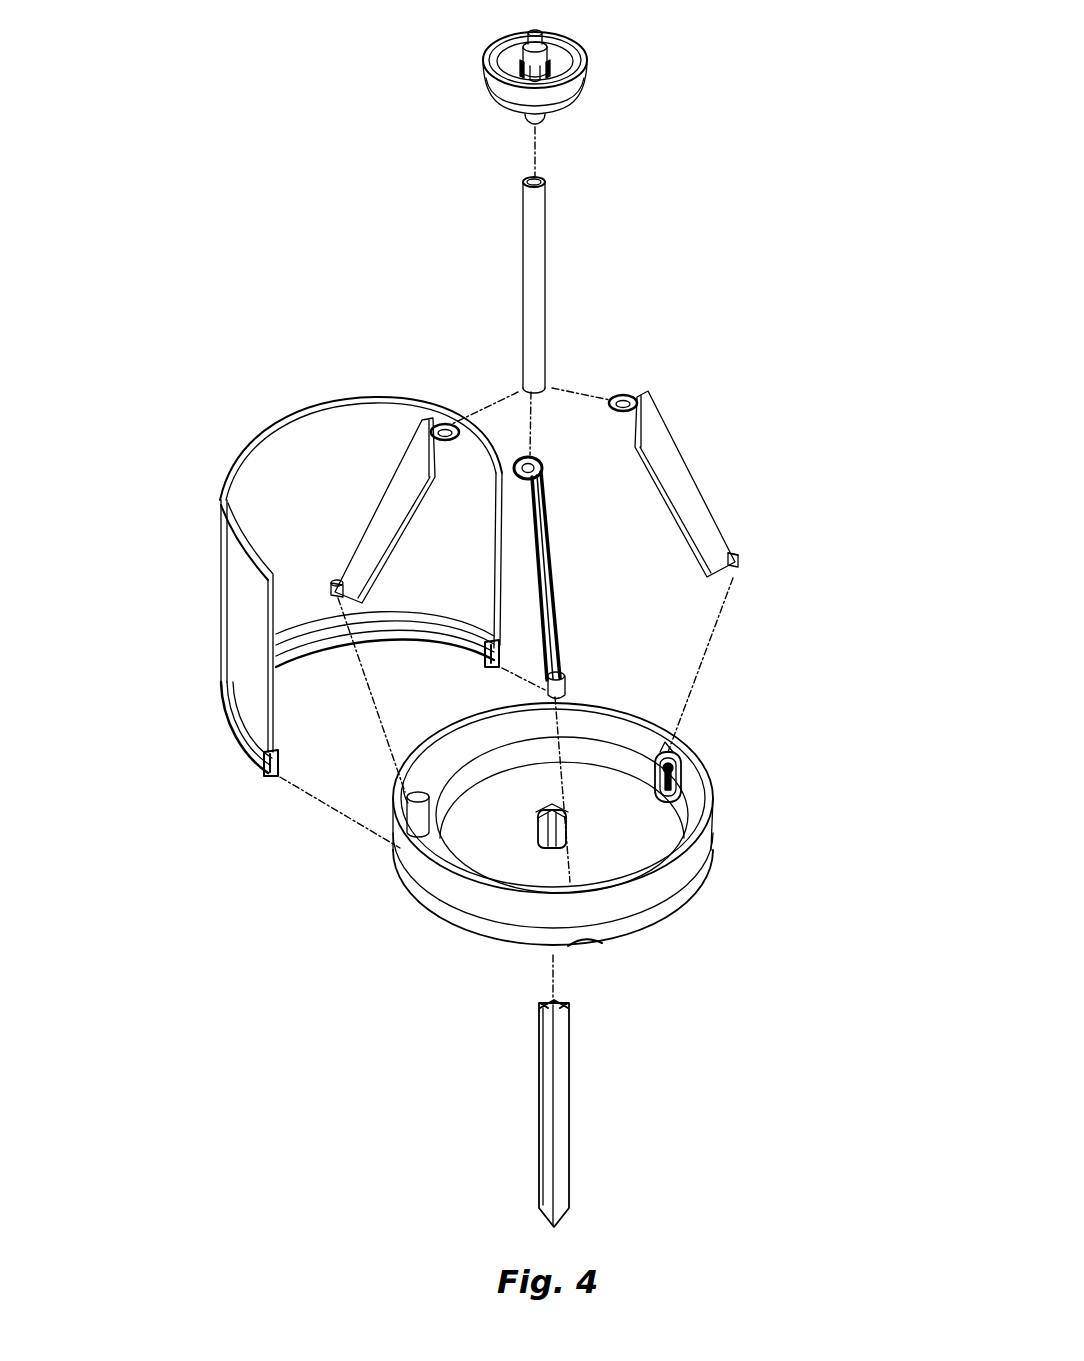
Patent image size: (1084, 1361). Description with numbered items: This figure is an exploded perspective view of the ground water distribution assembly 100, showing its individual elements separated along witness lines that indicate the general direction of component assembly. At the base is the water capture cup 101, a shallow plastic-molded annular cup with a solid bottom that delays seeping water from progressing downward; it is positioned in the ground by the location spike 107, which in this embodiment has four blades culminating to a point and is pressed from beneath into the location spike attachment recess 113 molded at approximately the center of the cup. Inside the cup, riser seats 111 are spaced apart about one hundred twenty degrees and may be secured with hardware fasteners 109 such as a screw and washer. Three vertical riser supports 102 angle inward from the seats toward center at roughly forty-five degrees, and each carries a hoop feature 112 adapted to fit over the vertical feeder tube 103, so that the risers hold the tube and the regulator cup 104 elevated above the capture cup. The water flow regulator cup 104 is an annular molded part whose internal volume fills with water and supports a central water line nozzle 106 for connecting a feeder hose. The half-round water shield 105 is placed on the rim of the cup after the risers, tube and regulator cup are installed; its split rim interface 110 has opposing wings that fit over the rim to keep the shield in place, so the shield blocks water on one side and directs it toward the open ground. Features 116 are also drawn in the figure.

The ground water distribution assembly 100 is at (797, 136).
The water capture cup 101 is at (417, 873).
The vertical riser supports 102 is at (550, 578).
The vertical feeder tube 103 is at (546, 268).
The water flow regulator cup 104 is at (587, 88).
The half-round water shield 105 is at (218, 545).
The water line nozzle 106 is at (525, 39).
The location spike 107 is at (572, 1124).
The hardware fasteners 109 is at (600, 943).
The split rim interface 110 is at (248, 762).
The riser seats 111 is at (663, 780).
The hoop feature 112 is at (618, 398).
The location spike attachment recess 113 is at (535, 828).
The pegs 116 is at (542, 643).